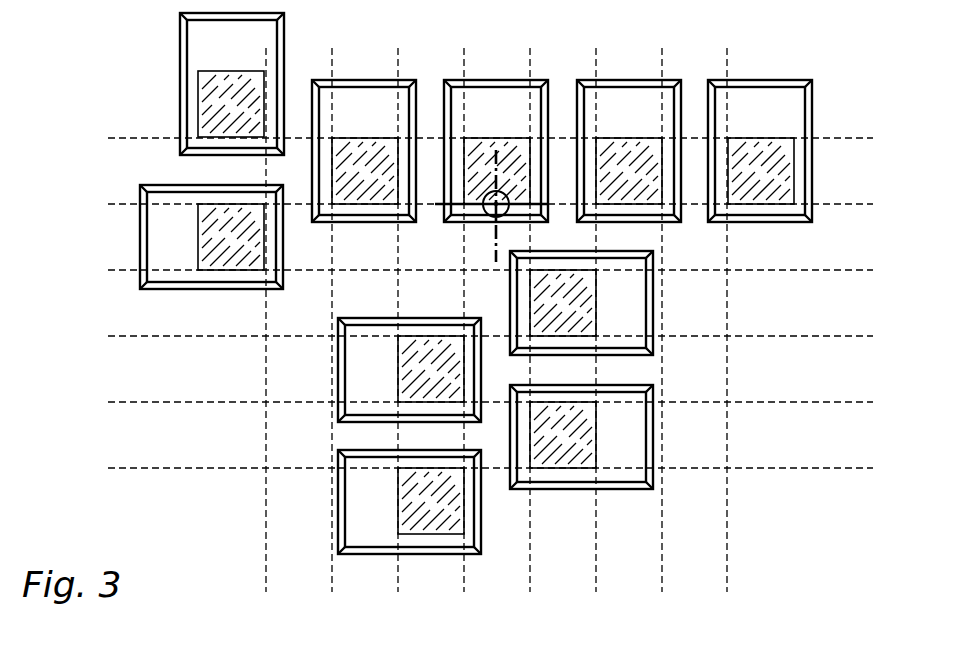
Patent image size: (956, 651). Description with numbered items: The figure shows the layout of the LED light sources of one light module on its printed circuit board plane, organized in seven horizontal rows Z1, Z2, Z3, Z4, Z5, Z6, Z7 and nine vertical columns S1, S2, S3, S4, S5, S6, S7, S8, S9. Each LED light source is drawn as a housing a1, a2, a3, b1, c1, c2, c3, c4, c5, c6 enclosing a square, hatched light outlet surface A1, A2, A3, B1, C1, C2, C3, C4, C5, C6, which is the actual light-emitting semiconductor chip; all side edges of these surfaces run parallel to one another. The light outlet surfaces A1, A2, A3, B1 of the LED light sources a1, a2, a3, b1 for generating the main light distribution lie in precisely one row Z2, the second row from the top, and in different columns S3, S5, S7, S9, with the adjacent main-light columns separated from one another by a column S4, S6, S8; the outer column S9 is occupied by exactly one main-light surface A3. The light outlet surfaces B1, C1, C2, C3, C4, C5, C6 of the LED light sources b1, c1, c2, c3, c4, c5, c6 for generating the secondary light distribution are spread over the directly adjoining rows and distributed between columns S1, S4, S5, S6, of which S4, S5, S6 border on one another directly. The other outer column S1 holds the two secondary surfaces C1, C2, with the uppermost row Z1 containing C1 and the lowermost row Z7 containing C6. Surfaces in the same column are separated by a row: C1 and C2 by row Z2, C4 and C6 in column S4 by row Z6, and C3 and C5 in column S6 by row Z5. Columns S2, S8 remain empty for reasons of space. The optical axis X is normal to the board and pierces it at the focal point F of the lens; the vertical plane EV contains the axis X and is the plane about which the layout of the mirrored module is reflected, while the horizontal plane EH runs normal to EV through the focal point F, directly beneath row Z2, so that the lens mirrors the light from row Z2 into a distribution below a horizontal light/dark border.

The light outlet surface C1 is at (205, 80).
The LED light source c1 is at (178, 110).
The light outlet surface A1 is at (357, 147).
The LED light source a1 is at (370, 80).
The light outlet surface B1 is at (507, 140).
The LED light source b1 is at (506, 80).
The light outlet surface A2 is at (628, 145).
The LED light source a2 is at (670, 80).
The light outlet surface A3 is at (765, 145).
The LED light source a3 is at (795, 80).
The light outlet surface C2 is at (205, 228).
The LED light source c2 is at (210, 290).
The light outlet surface C3 is at (590, 297).
The LED light source c3 is at (654, 333).
The light outlet surface C4 is at (398, 356).
The LED light source c4 is at (368, 318).
The light outlet surface C5 is at (590, 433).
The LED light source c5 is at (640, 490).
The light outlet surface C6 is at (402, 496).
The LED light source c6 is at (338, 478).
The vertical surface EV is at (493, 163).
The horizontal plane EH is at (436, 206).
The optical axis X is at (492, 206).
The focal point F is at (492, 210).
The uppermost row Z1 is at (493, 121).
The row Z2 is at (493, 183).
The row Z3 is at (493, 247).
The row Z4 is at (493, 313).
The row Z5 is at (493, 379).
The row Z6 is at (493, 445).
The lowermost row Z7 is at (493, 486).
The outer column S1 is at (245, 324).
The column S2 is at (310, 324).
The column S3 is at (376, 324).
The column S4 is at (441, 324).
The column S5 is at (506, 324).
The column S6 is at (572, 324).
The column S7 is at (638, 324).
The column S8 is at (703, 324).
The outer column S9 is at (750, 324).